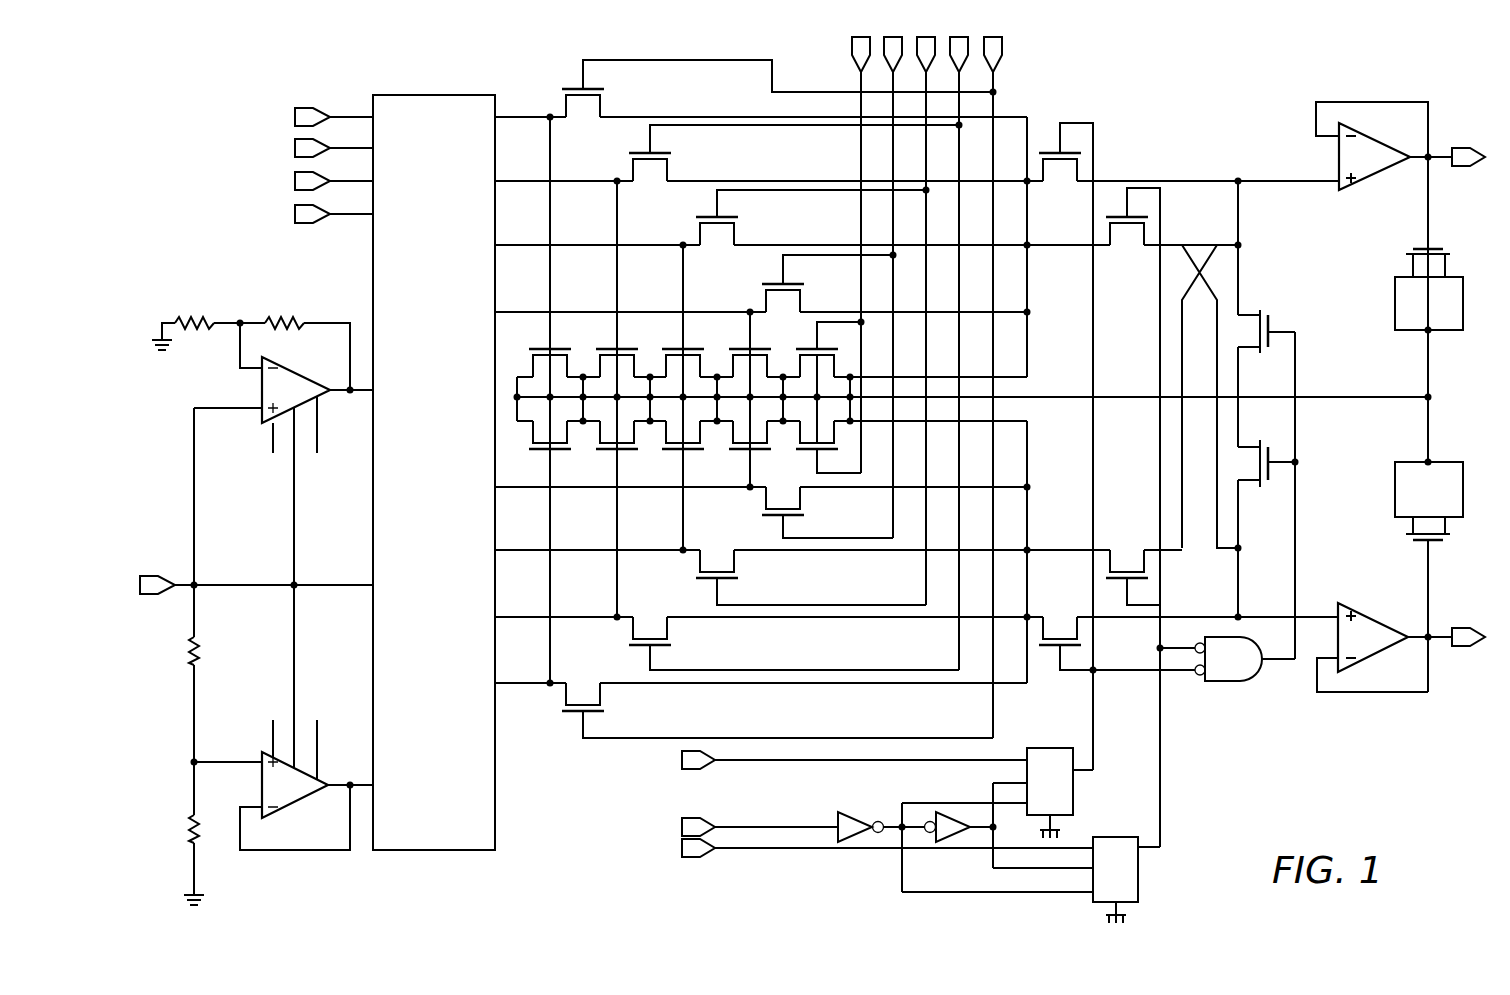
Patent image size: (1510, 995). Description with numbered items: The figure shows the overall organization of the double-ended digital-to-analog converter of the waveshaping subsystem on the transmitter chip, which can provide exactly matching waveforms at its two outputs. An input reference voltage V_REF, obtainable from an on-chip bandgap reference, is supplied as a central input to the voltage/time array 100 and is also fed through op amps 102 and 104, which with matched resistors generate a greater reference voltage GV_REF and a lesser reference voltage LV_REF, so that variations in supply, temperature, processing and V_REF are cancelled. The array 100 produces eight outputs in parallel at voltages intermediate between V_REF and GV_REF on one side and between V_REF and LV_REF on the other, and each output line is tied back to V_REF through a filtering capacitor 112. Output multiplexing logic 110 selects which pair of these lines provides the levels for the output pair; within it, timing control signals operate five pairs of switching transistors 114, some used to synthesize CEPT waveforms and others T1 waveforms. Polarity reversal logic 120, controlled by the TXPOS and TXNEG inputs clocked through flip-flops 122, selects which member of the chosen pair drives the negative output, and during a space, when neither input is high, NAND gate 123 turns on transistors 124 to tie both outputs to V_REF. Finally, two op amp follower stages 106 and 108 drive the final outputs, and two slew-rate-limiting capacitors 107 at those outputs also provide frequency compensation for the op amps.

The voltage/time array 100 is at (432, 95).
The op amp 102 is at (262, 392).
The op amp 104 is at (266, 790).
The op amp follower stage 106 is at (1369, 194).
The slew-rate-limiting capacitor 107 is at (1406, 535).
The op amp follower stage 108 is at (1365, 617).
The output multiplexing logic 110 is at (1230, 75).
The filtering capacitor 112 is at (540, 342).
The switching transistor 114 is at (608, 699).
The polarity reversal logic 120 is at (1217, 773).
The flip-flop 122 is at (1160, 883).
The NAND gate 123 is at (1246, 690).
The transistor 124 is at (1280, 320).